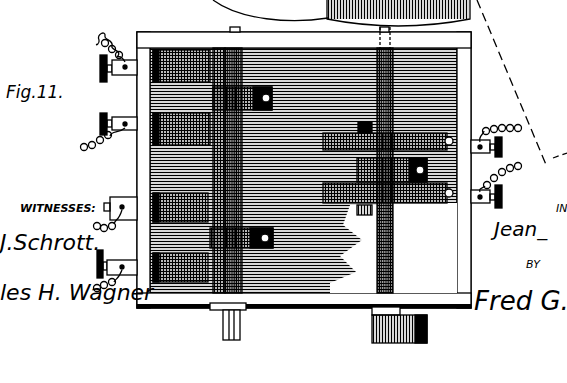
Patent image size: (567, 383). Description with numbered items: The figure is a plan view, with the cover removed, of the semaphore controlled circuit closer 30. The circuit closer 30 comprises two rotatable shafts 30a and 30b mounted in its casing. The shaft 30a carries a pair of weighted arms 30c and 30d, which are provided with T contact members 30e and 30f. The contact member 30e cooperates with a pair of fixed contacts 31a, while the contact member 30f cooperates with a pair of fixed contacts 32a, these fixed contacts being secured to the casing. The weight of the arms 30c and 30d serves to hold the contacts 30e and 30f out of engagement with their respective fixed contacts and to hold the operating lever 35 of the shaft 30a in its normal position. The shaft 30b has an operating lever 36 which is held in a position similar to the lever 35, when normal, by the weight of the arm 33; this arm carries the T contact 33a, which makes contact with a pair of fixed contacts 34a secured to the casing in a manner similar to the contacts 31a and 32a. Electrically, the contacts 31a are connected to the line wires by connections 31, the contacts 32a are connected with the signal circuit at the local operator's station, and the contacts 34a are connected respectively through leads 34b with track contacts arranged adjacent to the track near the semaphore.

The circuit closer 30 is at (470, 118).
The rotatable shaft 30a is at (270, 207).
The rotatable shaft 30b is at (388, 262).
The weighted arm 30c is at (262, 250).
The weighted arm 30d is at (253, 112).
The T contact member 30e is at (181, 166).
The T contact member 30f is at (213, 170).
The connections 31 is at (98, 47).
The fixed contacts 31a is at (172, 62).
The fixed contacts 32a is at (150, 193).
The arm 33 is at (404, 207).
The T contact 33a is at (388, 184).
The fixed contacts 34a is at (353, 183).
The leads 34b is at (520, 127).
The operating lever 35 is at (241, 328).
The operating lever 36 is at (434, 325).